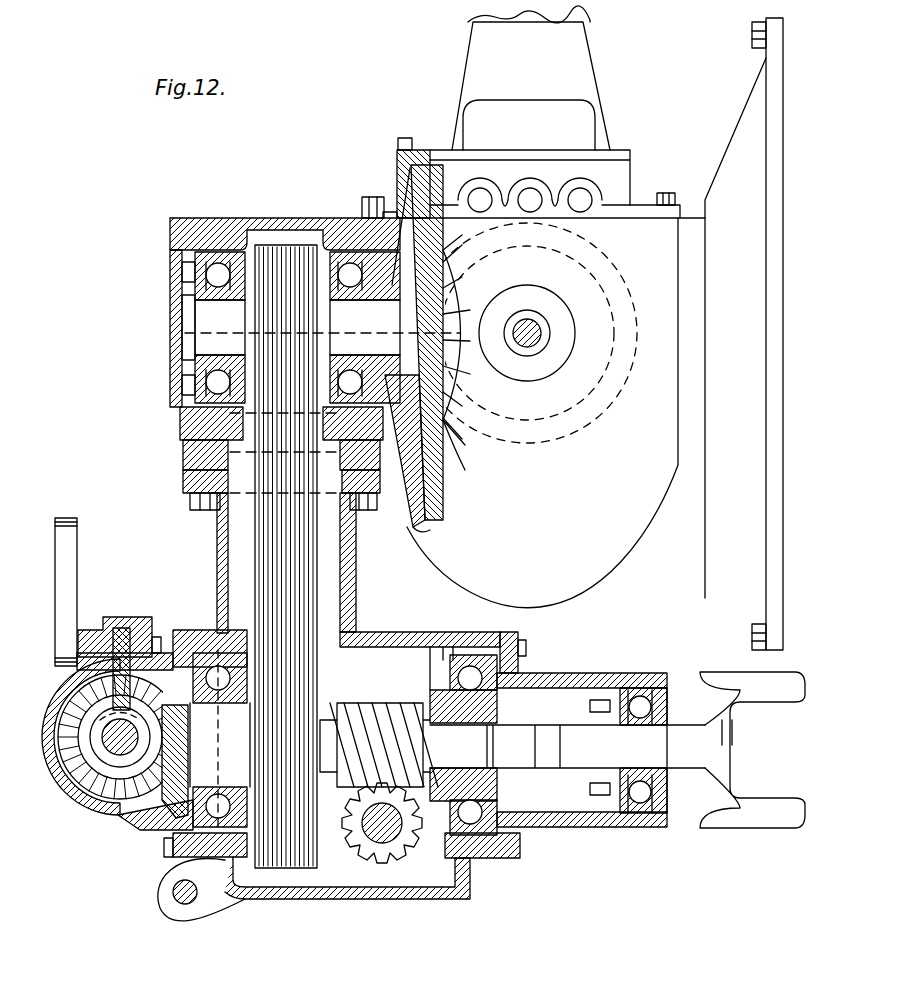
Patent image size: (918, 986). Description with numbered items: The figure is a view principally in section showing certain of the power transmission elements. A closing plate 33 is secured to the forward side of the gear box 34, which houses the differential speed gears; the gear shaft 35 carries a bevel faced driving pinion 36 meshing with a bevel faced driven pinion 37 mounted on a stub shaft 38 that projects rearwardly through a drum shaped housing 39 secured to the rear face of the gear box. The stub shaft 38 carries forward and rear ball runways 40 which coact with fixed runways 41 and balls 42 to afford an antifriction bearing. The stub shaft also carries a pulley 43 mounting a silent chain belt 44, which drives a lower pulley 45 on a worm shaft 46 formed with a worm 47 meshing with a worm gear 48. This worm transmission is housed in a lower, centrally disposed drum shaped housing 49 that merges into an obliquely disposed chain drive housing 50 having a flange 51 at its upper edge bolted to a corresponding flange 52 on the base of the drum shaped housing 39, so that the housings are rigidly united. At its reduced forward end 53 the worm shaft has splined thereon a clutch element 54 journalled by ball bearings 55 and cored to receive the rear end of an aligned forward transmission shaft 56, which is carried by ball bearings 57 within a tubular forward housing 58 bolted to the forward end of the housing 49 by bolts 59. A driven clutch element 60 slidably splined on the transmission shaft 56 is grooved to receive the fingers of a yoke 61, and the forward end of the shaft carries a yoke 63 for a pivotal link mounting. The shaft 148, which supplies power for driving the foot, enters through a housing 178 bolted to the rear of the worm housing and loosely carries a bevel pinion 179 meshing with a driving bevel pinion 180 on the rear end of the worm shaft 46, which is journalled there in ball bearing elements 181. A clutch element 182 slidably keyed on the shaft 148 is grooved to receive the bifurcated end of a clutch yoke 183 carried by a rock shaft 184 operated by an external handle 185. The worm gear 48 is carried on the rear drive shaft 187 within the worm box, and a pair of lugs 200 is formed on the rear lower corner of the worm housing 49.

The closing plate 33 is at (744, 334).
The gear box 34 is at (552, 307).
The gear shaft 35 is at (541, 337).
The bevel faced driving pinion 36 is at (468, 402).
The bevel faced driven pinion 37 is at (445, 455).
The stub shaft 38 is at (322, 327).
The drum shaped housing 39 is at (235, 222).
The ball runways 40 is at (155, 311).
The fixed runways 41 is at (338, 225).
The balls 42 is at (398, 265).
The pulley 43 is at (185, 347).
The silent chain belt 44 is at (248, 432).
The lower pulley 45 is at (292, 852).
The worm shaft 46 is at (330, 708).
The worm 47 is at (380, 703).
The worm gear 48 is at (400, 848).
The drum shaped housing 49 is at (330, 896).
The chain drive housing 50 is at (340, 582).
The flange 51 is at (182, 485).
The flange 52 is at (182, 458).
The reduced forward end 53 is at (443, 746).
The clutch element 54 is at (515, 690).
The ball bearings 55 is at (505, 826).
The forward transmission shaft 56 is at (567, 750).
The ball bearings 57 is at (660, 690).
The tubular forward housing 58 is at (590, 673).
The bolts 59 is at (525, 640).
The driven clutch element 60 is at (600, 797).
The yoke 61 is at (640, 692).
The yoke 63 is at (700, 770).
The shaft 148 is at (122, 755).
The housing 178 is at (118, 800).
The bevel pinion 179 is at (170, 840).
The driving bevel pinion 180 is at (165, 757).
The ball bearing elements 181 is at (205, 660).
The clutch element 182 is at (65, 795).
The clutch yoke 183 is at (130, 640).
The rock shaft 184 is at (95, 640).
The handle 185 is at (70, 555).
The rear drive shaft 187 is at (388, 845).
The lugs 200 is at (172, 891).